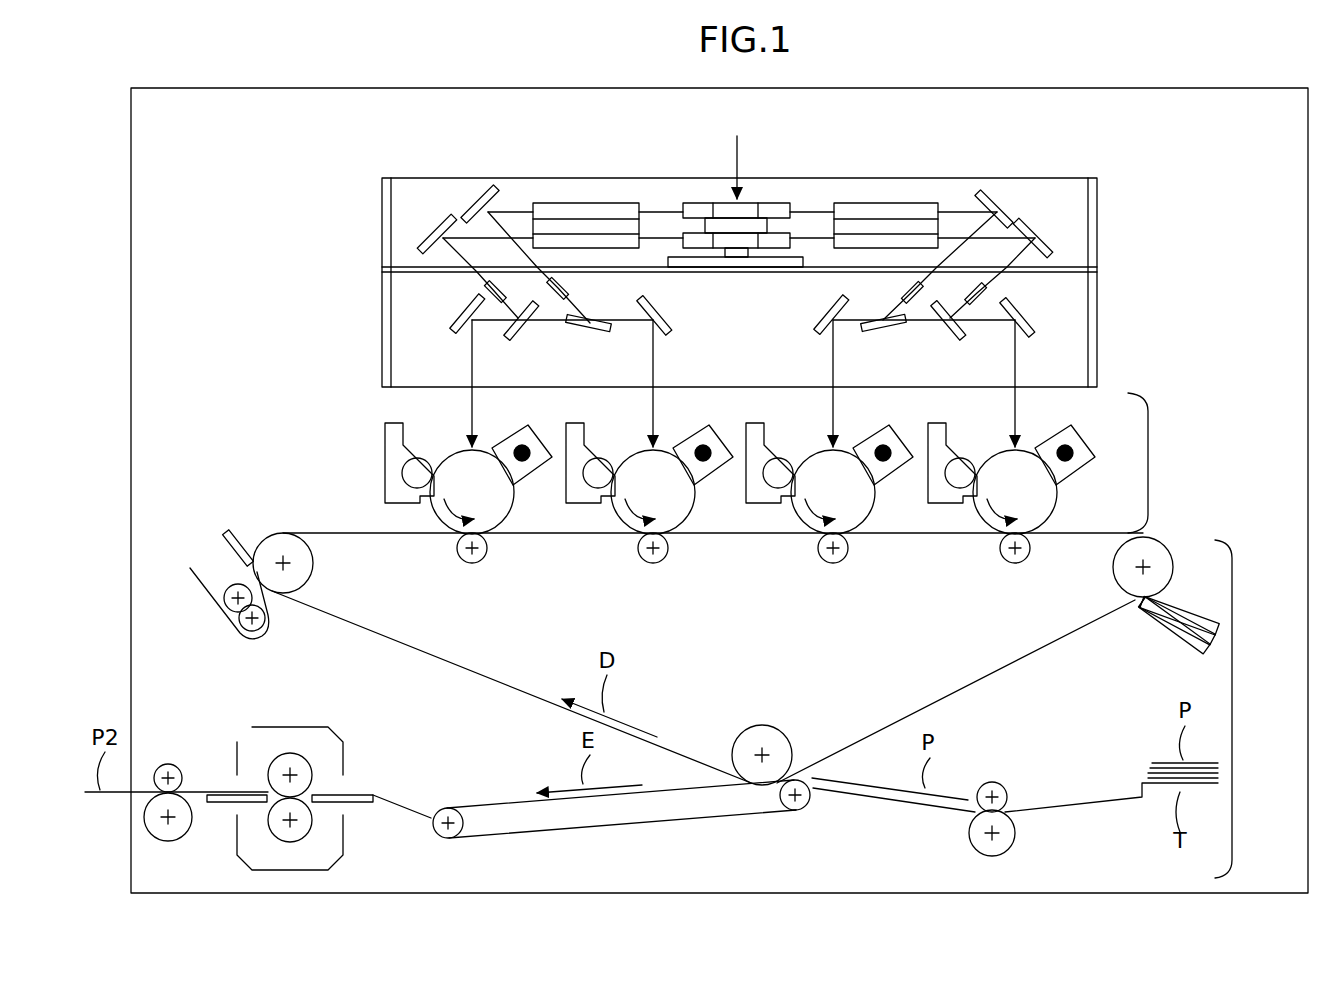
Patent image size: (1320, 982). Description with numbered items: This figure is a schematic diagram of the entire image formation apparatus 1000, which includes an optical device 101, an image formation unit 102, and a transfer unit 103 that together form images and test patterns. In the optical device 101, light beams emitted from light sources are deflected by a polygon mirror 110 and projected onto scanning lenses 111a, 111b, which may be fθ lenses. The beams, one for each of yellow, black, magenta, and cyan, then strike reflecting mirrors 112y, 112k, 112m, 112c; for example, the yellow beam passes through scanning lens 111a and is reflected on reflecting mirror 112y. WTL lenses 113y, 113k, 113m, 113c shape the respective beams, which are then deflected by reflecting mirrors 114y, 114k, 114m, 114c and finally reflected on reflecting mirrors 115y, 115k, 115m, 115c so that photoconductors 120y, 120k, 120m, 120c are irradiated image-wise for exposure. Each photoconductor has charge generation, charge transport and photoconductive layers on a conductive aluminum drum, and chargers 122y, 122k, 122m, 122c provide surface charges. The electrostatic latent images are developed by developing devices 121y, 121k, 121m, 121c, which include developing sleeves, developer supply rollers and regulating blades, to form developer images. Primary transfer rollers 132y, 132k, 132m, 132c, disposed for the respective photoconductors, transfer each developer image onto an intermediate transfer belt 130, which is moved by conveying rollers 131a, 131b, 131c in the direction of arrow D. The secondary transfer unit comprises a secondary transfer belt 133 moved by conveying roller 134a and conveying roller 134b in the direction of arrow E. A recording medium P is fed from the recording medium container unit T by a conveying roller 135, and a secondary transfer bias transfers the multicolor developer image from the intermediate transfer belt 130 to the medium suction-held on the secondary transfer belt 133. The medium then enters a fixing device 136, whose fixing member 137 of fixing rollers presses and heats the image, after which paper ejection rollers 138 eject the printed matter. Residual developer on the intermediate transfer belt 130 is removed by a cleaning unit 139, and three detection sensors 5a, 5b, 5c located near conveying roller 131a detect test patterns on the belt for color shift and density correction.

The image formation apparatus 1000 is at (194, 120).
The optical device 101 is at (1097, 218).
The image formation unit 102 is at (1148, 462).
The transfer unit 103 is at (1232, 707).
The polygon mirror 110 is at (692, 203).
The scanning lens 111a is at (884, 203).
The scanning lens 111b is at (586, 203).
The reflecting mirror 112c is at (431, 233).
The reflecting mirror 112m is at (478, 191).
The reflecting mirror 112k is at (991, 191).
The reflecting mirror 112y is at (1041, 233).
The WTL lens 113c is at (483, 292).
The WTL lens 113m is at (577, 287).
The WTL lens 113k is at (903, 287).
The WTL lens 113y is at (985, 302).
The reflecting mirror 114c is at (527, 335).
The reflecting mirror 114m is at (590, 330).
The reflecting mirror 114k is at (880, 330).
The reflecting mirror 114y is at (943, 330).
The reflecting mirror 115c is at (457, 312).
The reflecting mirror 115m is at (672, 325).
The reflecting mirror 115k is at (822, 312).
The reflecting mirror 115y is at (1035, 333).
The photoconductor 120c is at (499, 512).
The photoconductor 120m is at (680, 512).
The photoconductor 120k is at (860, 512).
The photoconductor 120y is at (1042, 512).
The developing device 121c is at (393, 442).
The developing device 121m is at (574, 442).
The developing device 121k is at (754, 442).
The developing device 121y is at (915, 424).
The charger 122c is at (513, 443).
The charger 122m is at (694, 443).
The charger 122k is at (874, 443).
The charger 122y is at (1056, 443).
The intermediate transfer belt 130 is at (922, 698).
The conveying roller 131a is at (1176, 565).
The conveying roller 131b is at (757, 724).
The conveying roller 131c is at (313, 580).
The primary transfer roller 132c is at (472, 565).
The primary transfer roller 132m is at (653, 565).
The primary transfer roller 132k is at (833, 565).
The primary transfer roller 132y is at (1015, 565).
The secondary transfer belt 133 is at (626, 832).
The conveying roller 134a is at (795, 813).
The conveying roller 134b is at (448, 841).
The conveying roller 135 is at (1012, 802).
The fixing device 136 is at (343, 745).
The fixing member 137 is at (290, 750).
The paper ejection rollers 138 is at (191, 785).
The cleaning unit 139 is at (222, 614).
The detection sensor 5a is at (1172, 644).
The detection sensor 5b is at (1177, 621).
The detection sensor 5c is at (1174, 625).